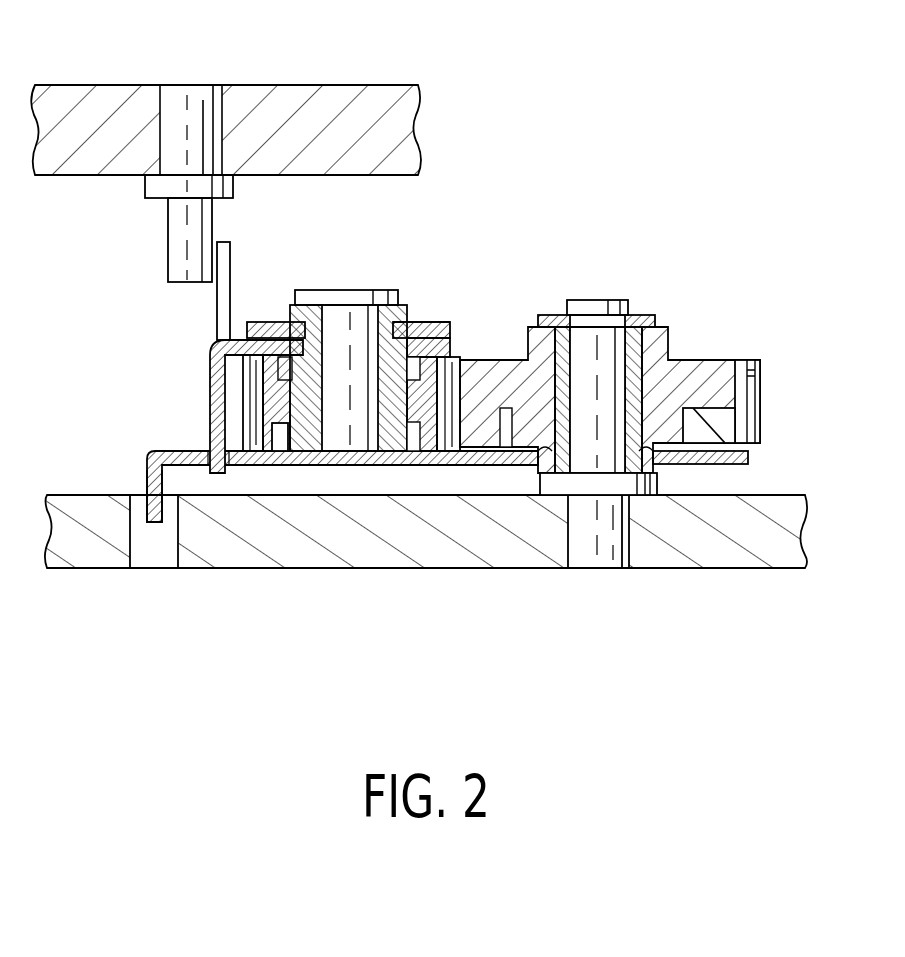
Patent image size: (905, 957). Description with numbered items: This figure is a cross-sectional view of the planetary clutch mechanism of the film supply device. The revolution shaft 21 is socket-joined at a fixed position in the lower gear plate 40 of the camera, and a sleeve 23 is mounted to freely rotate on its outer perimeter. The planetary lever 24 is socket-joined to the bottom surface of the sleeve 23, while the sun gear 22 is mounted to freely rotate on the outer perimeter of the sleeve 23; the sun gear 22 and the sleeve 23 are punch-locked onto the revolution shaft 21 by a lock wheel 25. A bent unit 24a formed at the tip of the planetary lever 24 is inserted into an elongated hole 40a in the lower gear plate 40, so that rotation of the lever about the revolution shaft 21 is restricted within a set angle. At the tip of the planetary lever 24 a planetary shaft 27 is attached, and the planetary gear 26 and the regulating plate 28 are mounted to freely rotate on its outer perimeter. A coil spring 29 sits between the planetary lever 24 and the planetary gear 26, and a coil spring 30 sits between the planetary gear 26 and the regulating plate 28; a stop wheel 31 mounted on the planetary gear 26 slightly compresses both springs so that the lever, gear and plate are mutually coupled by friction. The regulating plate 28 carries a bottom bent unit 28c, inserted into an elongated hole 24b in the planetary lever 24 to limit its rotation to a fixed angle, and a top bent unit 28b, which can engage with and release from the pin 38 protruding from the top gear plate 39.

The revolution shaft 21 is at (593, 300).
The sun gear 22 is at (707, 368).
The sleeve 23 is at (673, 422).
The planetary lever 24 is at (742, 455).
The bent unit 24a is at (147, 515).
The elongated hole 24b is at (207, 452).
The lock wheel 25 is at (642, 317).
The planetary gear 26 is at (390, 435).
The planetary shaft 27 is at (362, 293).
The regulating plate 28 is at (455, 352).
The top bent unit 28b is at (227, 262).
The bottom bent unit 28c is at (212, 430).
The coil spring 29 is at (287, 425).
The coil spring 30 is at (282, 380).
The stop wheel 31 is at (433, 323).
The pin 38 is at (178, 223).
The top gear plate 39 is at (300, 95).
The lower gear plate 40 is at (515, 553).
The elongated hole 40a is at (137, 548).